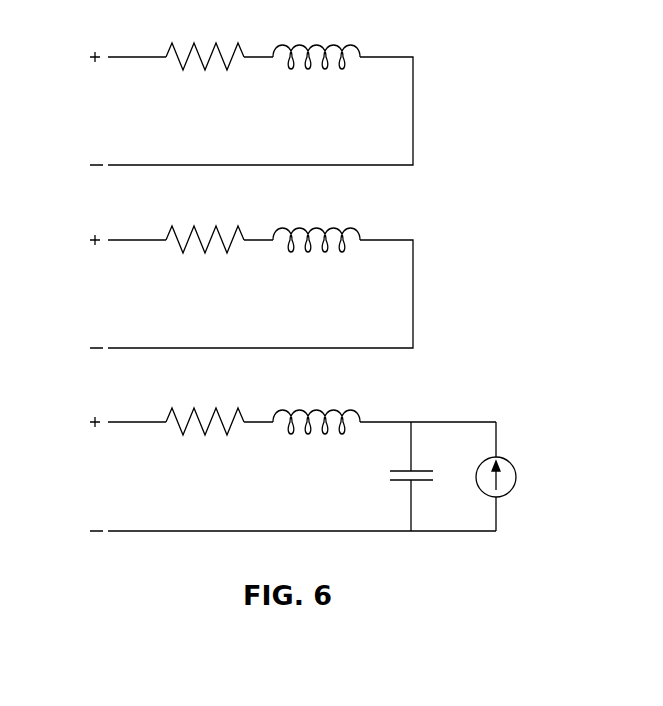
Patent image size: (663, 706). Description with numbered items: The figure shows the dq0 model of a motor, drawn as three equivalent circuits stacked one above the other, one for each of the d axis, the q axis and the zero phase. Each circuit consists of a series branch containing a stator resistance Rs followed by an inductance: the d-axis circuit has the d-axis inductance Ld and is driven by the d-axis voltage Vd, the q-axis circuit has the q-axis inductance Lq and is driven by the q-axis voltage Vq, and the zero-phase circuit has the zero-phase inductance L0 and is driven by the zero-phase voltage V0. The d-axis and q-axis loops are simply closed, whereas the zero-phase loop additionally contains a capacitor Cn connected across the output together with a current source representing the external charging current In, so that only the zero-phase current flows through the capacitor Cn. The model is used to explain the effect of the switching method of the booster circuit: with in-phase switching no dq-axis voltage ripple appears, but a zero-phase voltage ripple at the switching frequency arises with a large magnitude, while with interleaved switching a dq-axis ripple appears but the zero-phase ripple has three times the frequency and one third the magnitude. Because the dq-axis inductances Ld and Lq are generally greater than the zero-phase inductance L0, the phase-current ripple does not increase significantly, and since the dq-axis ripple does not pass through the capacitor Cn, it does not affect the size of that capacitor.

The stator resistance Rs is at (205, 222).
The d-axis inductance Ld is at (316, 39).
The q-axis inductance Lq is at (316, 222).
The zero-sequence inductance L0 is at (316, 404).
The d-axis voltage Vd is at (232, 108).
The q-axis voltage Vq is at (232, 291).
The zero-sequence voltage V0 is at (274, 474).
The capacitor Cn is at (395, 476).
The external charging current In is at (509, 476).